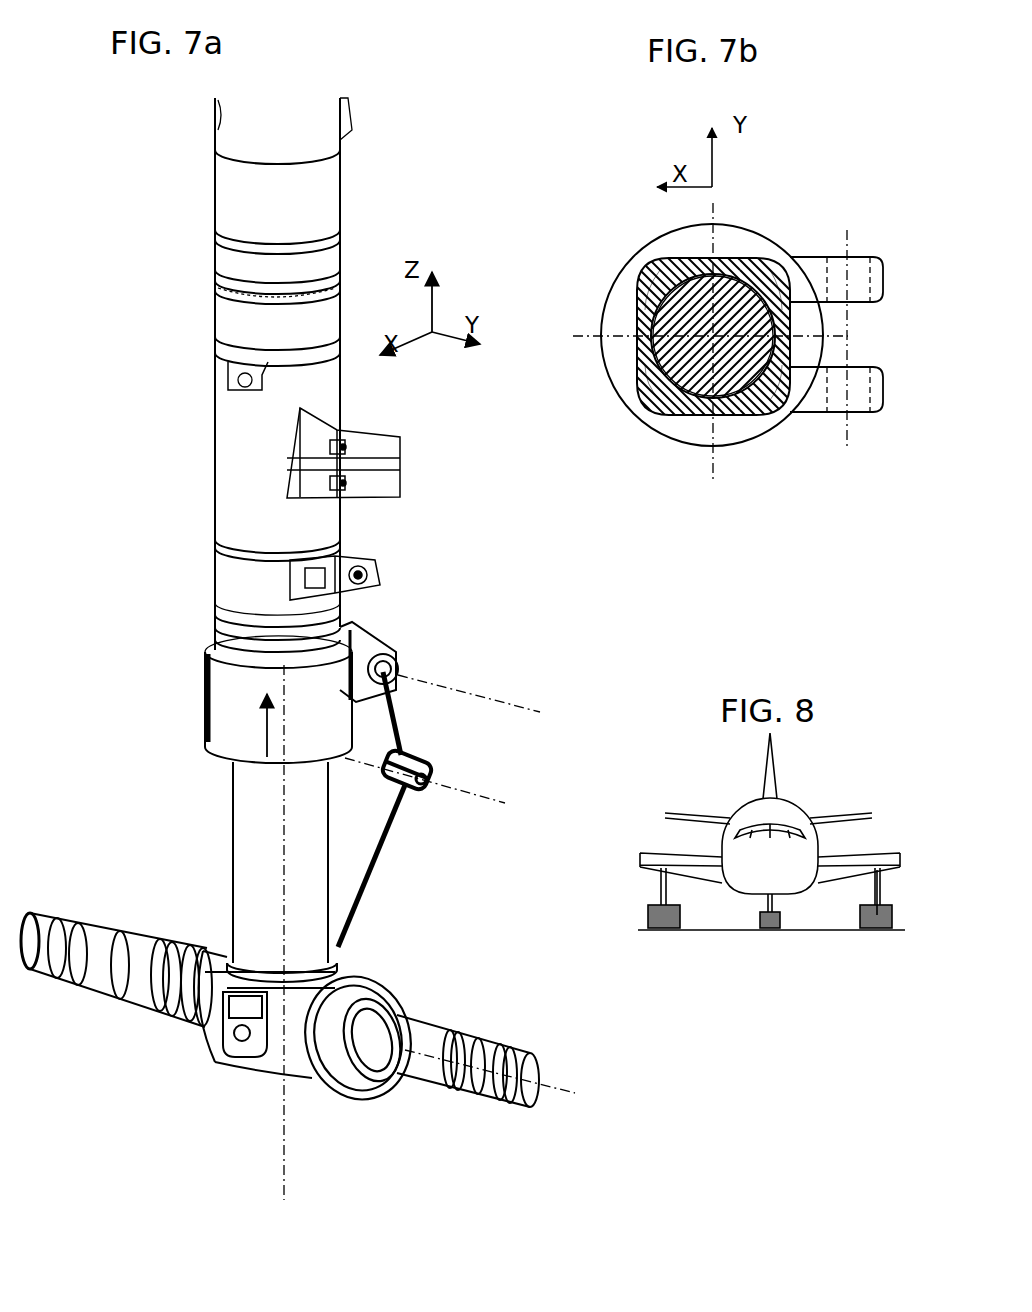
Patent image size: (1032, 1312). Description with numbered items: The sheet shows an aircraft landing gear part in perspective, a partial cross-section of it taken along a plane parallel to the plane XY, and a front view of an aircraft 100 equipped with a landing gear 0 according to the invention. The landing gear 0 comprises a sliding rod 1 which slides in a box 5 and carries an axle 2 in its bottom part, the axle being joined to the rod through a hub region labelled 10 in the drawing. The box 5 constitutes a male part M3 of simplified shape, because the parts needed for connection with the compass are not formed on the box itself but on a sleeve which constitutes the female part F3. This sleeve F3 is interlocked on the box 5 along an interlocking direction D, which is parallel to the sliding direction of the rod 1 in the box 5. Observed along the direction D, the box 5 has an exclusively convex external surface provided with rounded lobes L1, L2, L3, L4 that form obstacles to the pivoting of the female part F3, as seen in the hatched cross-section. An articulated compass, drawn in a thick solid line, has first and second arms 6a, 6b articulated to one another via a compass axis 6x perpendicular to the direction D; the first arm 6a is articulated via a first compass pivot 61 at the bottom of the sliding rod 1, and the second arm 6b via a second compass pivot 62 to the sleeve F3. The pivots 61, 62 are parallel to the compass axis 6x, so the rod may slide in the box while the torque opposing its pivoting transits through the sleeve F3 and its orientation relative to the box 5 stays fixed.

In FIG. 7A, the landing gear 0 is at (172, 297).
In FIG. 8, the landing gear 0 is at (884, 918).
In FIG. 7A, the sliding rod 1 is at (248, 852).
In FIG. 7B, the sliding rod 1 is at (642, 300).
In FIG. 7A, the axle 2 is at (152, 958).
In FIG. 7A, the box 5 is at (239, 515).
In FIG. 7B, the box 5 is at (752, 267).
In FIG. 7A, the axle hub / lower connecting part 10 is at (330, 1045).
In FIG. 7A, the first compass pivot 61 is at (420, 984).
In FIG. 7A, the second compass pivot 62 is at (438, 683).
In FIG. 7B, the second compass pivot 62 is at (848, 440).
In FIG. 7A, the first arm 6a is at (372, 870).
In FIG. 7A, the second arm 6b is at (402, 730).
In FIG. 7A, the compass axis 6x is at (437, 792).
In FIG. 7A, the interlocking direction D is at (267, 728).
In FIG. 7A, the female part F3 is at (216, 728).
In FIG. 7B, the female part F3 is at (770, 263).
In FIG. 7A, the male part M3 is at (220, 640).
In FIG. 7B, the male part M3 is at (735, 267).
In FIG. 7B, the rounded lobe L1 is at (655, 400).
In FIG. 7B, the rounded lobe L2 is at (655, 267).
In FIG. 7B, the rounded lobe L3 is at (783, 280).
In FIG. 7B, the rounded lobe L4 is at (765, 402).
In FIG. 8, the aircraft 100 is at (789, 808).